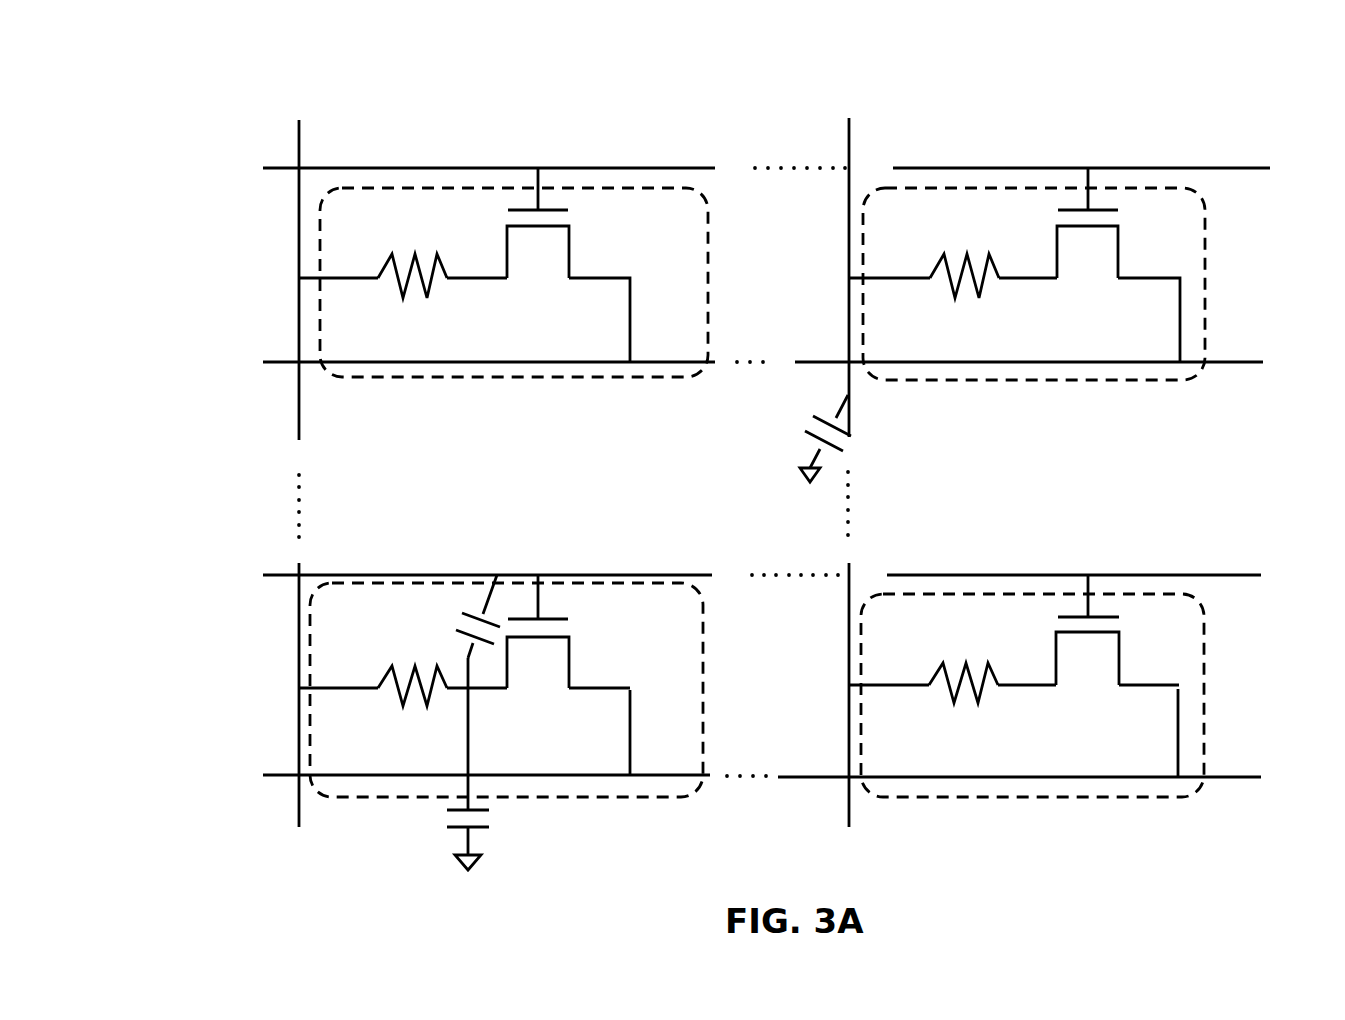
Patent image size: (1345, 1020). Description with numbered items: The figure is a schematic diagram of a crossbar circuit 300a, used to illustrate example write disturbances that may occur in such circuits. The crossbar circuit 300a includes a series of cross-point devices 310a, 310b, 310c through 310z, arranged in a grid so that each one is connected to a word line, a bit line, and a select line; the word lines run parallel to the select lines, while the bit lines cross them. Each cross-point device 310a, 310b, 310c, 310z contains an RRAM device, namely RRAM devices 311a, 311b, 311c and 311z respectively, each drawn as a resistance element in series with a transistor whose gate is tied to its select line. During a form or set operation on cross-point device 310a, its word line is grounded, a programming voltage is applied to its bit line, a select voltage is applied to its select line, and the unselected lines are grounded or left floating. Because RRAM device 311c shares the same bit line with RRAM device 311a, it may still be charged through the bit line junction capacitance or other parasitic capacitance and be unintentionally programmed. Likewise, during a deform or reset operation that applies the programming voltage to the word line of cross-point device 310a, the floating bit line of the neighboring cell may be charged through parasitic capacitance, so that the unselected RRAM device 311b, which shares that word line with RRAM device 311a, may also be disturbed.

The crossbar circuit 300a is at (783, 42).
The cross-point device 310a is at (547, 272).
The cross-point device 310b is at (1070, 274).
The cross-point device 310c is at (546, 686).
The cross-point device 310z is at (1075, 686).
The RRAM device 311a is at (430, 297).
The RRAM device 311b is at (982, 295).
The RRAM device 311c is at (407, 703).
The RRAM device 311z is at (980, 700).